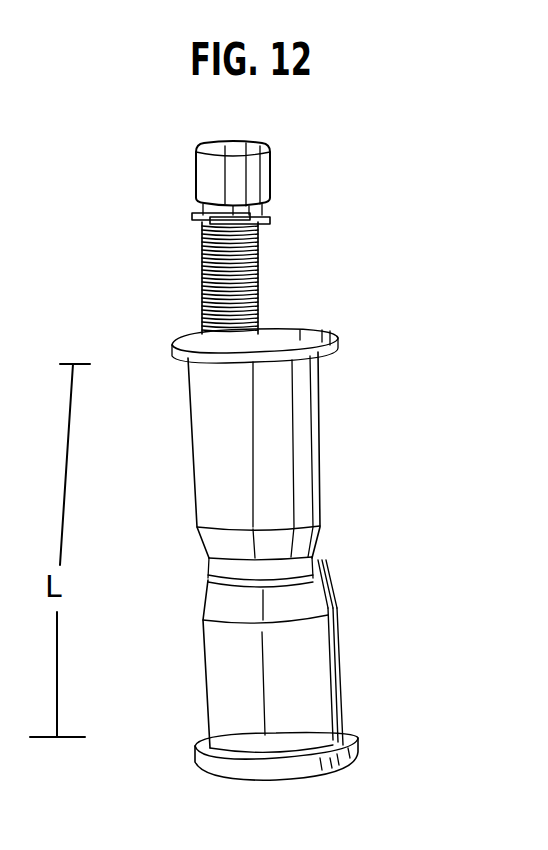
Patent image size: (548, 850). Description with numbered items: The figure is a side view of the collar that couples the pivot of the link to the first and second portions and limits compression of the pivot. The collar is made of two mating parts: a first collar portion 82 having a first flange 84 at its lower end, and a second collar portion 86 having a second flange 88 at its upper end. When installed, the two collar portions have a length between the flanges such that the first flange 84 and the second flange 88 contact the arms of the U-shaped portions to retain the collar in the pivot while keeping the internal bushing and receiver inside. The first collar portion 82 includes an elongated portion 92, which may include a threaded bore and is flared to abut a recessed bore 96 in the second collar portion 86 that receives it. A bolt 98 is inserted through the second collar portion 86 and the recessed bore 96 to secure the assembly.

The bolt 98 is at (202, 255).
The second flange 88 is at (338, 350).
The second collar portion 86 is at (330, 448).
The recessed bore 96 is at (215, 565).
The elongated portion 92 is at (330, 565).
The first collar portion 82 is at (332, 668).
The first flange 84 is at (356, 742).